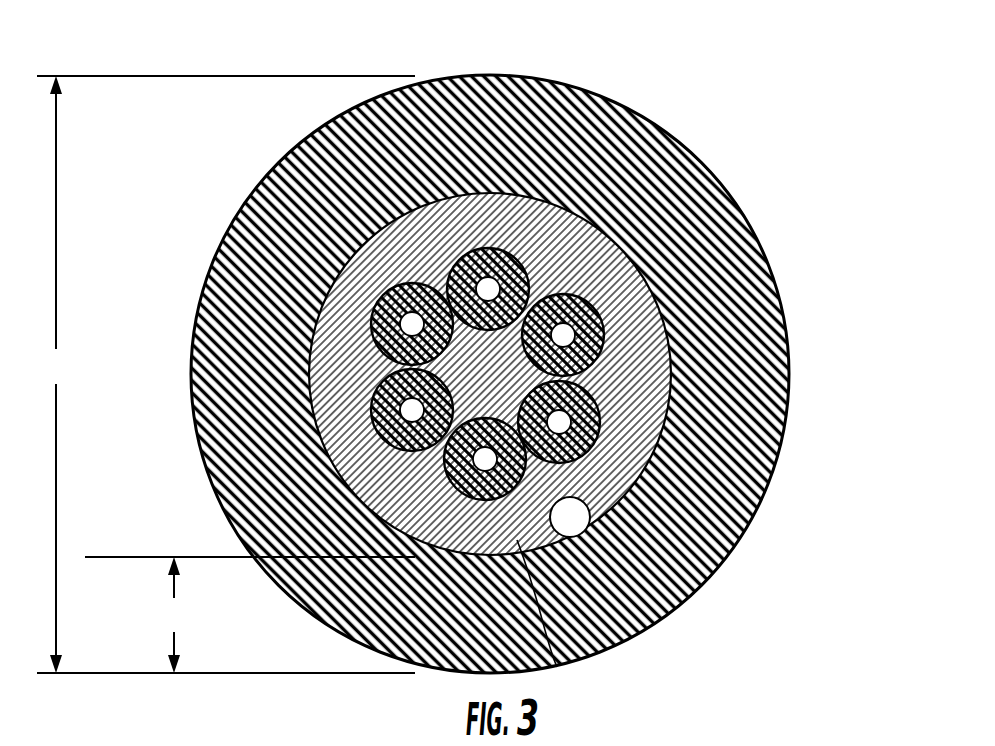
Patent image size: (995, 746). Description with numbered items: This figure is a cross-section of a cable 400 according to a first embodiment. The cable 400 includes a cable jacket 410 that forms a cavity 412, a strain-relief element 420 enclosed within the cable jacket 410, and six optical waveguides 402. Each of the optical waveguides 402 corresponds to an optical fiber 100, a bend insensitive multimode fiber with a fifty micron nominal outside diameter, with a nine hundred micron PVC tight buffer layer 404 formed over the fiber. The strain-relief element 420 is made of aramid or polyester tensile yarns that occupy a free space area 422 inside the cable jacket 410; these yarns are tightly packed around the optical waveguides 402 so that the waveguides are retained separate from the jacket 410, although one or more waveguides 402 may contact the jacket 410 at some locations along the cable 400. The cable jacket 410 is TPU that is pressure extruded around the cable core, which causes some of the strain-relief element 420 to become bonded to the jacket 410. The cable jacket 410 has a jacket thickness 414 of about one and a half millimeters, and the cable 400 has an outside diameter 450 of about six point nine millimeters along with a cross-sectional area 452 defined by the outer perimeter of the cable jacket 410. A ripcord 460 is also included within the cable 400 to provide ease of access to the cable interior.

The cable 400 is at (298, 46).
The cable jacket 410 is at (611, 151).
The cavity 412 is at (557, 667).
The jacket thickness 414 is at (250, 615).
The strain-relief element 420 is at (525, 213).
The free space area 422 is at (610, 263).
The optical waveguides 402 is at (437, 480).
The tight buffer layers 404 is at (390, 393).
The optical fiber 100 is at (561, 423).
The cable diameter 450 is at (226, 374).
The cross-sectional area 452 is at (757, 505).
The ripcord 460 is at (565, 522).